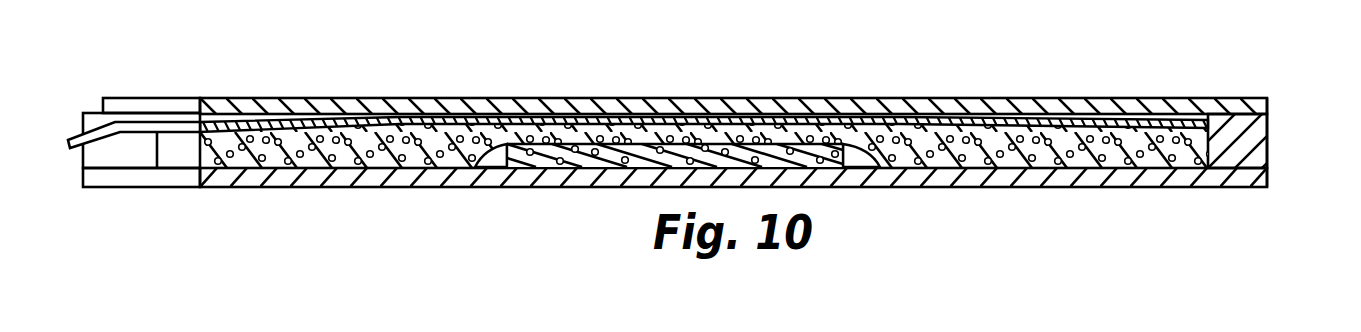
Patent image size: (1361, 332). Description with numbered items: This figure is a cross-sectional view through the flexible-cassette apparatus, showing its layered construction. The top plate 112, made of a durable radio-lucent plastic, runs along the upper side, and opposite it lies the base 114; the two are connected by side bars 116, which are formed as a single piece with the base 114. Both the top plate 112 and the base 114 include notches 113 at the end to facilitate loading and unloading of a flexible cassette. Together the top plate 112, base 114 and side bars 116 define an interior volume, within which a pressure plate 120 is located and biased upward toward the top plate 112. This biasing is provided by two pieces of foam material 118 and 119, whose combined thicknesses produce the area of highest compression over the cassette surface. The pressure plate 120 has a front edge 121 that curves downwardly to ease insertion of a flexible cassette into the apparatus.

The top plate 112 is at (333, 103).
The notches 113 is at (165, 103).
The base 114 is at (460, 176).
The side bars 116 is at (1255, 140).
The foam material 118 is at (596, 150).
The foam material 119 is at (922, 120).
The pressure plate 120 is at (138, 133).
The front edge 121 is at (78, 135).